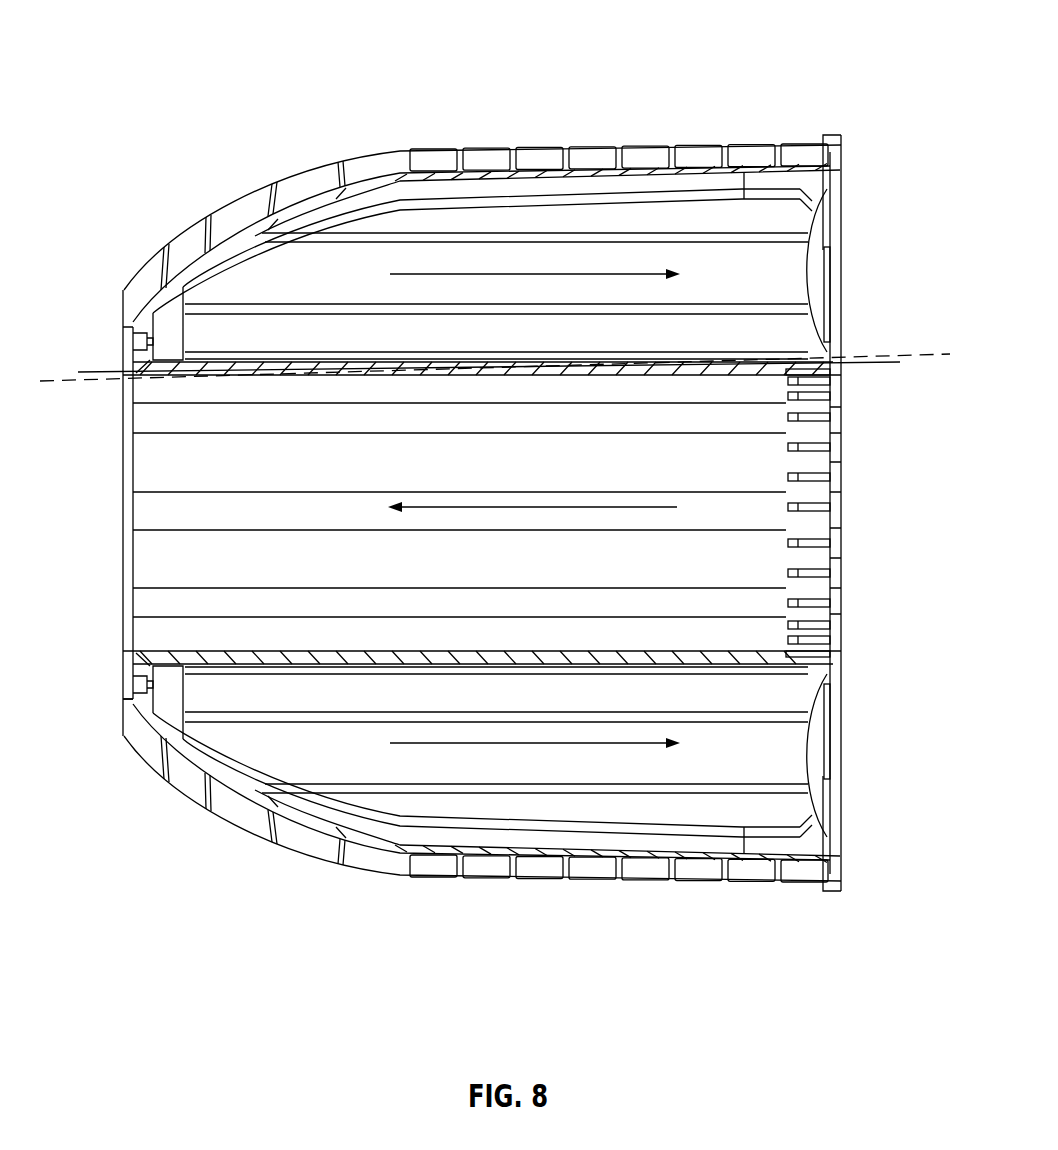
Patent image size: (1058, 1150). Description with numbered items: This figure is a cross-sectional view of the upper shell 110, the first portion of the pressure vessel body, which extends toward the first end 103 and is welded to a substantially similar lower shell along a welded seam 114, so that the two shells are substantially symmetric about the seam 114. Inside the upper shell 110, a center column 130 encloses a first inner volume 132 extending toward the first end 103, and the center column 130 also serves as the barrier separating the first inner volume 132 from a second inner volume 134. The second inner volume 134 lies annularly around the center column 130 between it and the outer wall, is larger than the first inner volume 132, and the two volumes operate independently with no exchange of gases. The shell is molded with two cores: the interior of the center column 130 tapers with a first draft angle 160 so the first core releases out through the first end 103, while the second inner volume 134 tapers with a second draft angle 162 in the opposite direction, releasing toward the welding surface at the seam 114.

The upper shell 110 is at (124, 30).
The second inner volume 134 is at (657, 217).
The first inner volume 132 is at (157, 513).
The welded seam 114 is at (831, 479).
The first draft angle 160 is at (66, 378).
The second draft angle 162 is at (914, 360).
The center column 130 is at (130, 658).
The first end 103 is at (127, 697).